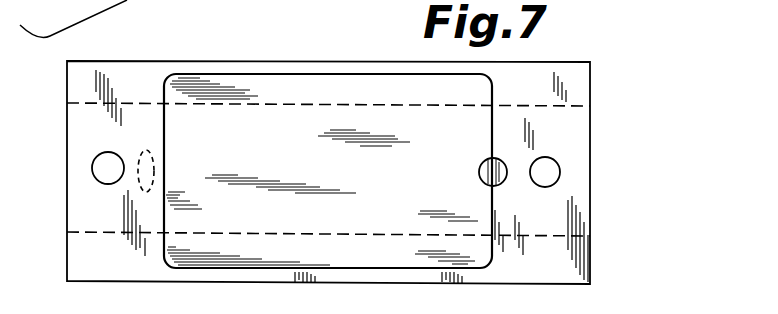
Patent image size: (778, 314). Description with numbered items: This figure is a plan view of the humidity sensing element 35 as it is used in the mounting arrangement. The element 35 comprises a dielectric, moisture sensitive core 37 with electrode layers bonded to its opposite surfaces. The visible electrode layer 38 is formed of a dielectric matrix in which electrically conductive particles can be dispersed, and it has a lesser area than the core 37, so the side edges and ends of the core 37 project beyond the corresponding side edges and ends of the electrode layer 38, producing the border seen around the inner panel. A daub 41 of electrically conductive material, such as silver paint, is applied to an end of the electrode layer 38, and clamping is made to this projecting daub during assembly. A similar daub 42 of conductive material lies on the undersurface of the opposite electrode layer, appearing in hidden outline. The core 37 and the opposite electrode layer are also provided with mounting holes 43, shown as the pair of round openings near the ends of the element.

The humidity sensing element 35 is at (224, 62).
The moisture sensitive core 37 is at (580, 88).
The electrode layer 38 is at (443, 86).
The daub 41 is at (484, 166).
The daub 42 is at (152, 160).
The mounting holes 43 is at (95, 160).